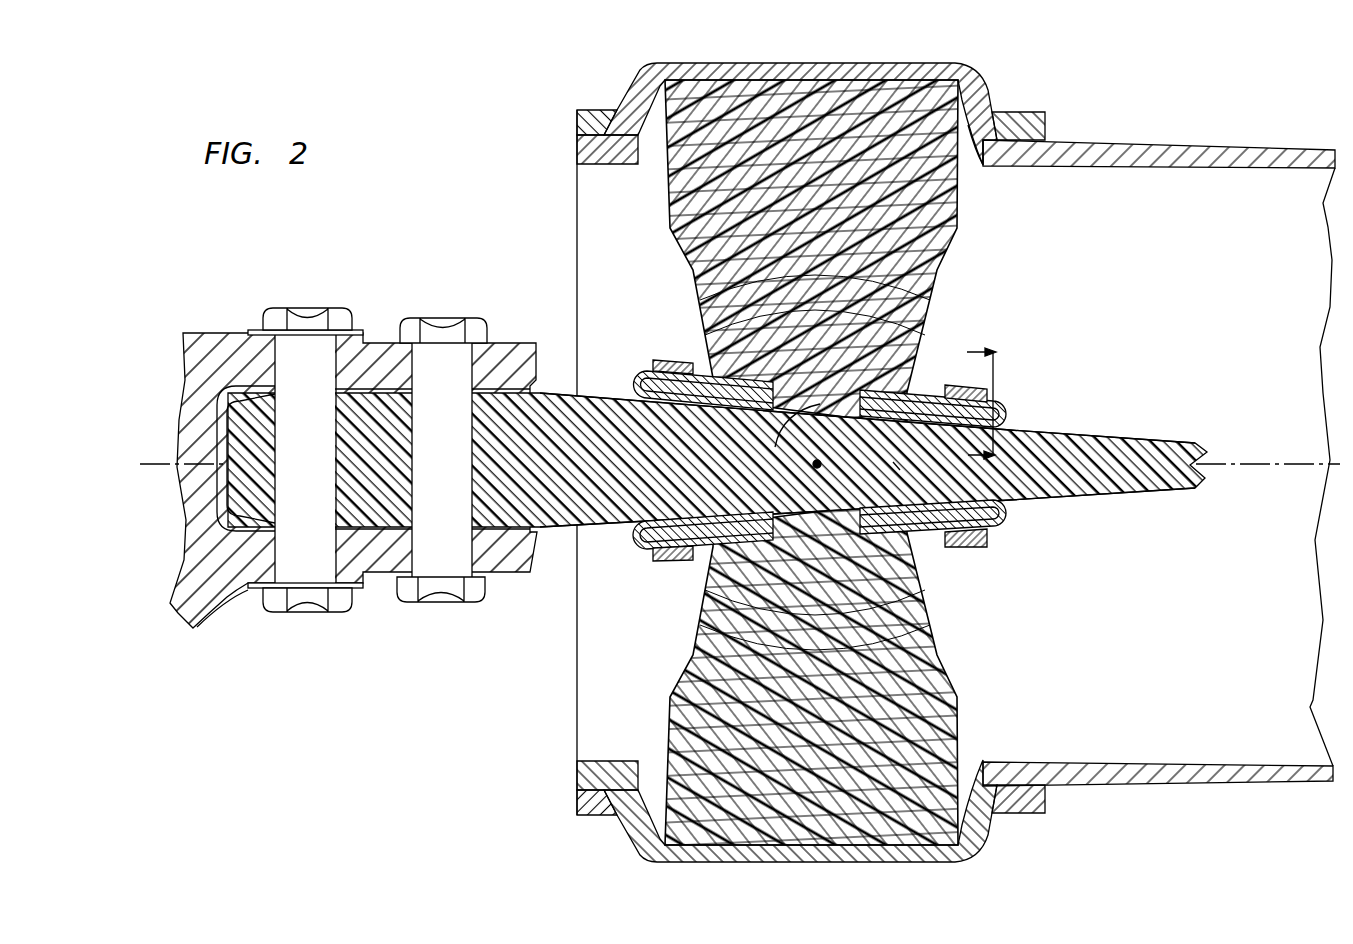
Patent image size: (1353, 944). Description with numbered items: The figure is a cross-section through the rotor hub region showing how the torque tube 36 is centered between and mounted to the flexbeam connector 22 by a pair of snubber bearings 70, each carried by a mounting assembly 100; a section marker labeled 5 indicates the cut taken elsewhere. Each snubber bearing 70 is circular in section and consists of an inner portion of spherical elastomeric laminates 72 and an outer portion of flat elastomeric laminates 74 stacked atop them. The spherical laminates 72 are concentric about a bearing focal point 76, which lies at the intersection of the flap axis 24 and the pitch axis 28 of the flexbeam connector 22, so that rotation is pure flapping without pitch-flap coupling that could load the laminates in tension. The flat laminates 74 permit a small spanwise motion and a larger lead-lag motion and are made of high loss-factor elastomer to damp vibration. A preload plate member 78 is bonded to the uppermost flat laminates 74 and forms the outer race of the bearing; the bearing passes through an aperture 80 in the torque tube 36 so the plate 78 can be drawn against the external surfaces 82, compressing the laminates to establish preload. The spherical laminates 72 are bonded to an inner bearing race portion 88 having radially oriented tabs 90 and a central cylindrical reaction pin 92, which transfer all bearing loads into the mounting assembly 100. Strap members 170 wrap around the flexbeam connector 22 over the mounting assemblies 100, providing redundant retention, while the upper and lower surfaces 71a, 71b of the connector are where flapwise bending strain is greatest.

The preload plate member 78 is at (920, 63).
The external surfaces of the torque tube 82 is at (1073, 140).
The torque tube 36 is at (1170, 168).
The aperture 80 is at (980, 160).
The snubber bearing 70 is at (1068, 265).
The flat elastomeric laminates 74 is at (822, 165).
The spherical elastomeric laminates 72 is at (822, 315).
The inner bearing race portion 88 is at (829, 391).
The bearing focal point 76 is at (822, 468).
The flexbeam connector 22 is at (1131, 476).
The upper surface of the flexbeam connector 71a is at (1113, 438).
The lower surface of the flexbeam connector 71b is at (1113, 497).
The radially oriented tabs 90 is at (663, 373).
The mounting assembly 100 is at (1036, 400).
The strap members 170 is at (672, 364).
The cylindrical reaction pin 92 is at (782, 432).
The flap axis 24 is at (812, 468).
The pitch axis 28 is at (893, 462).
The section line 5- 5 is at (968, 400).